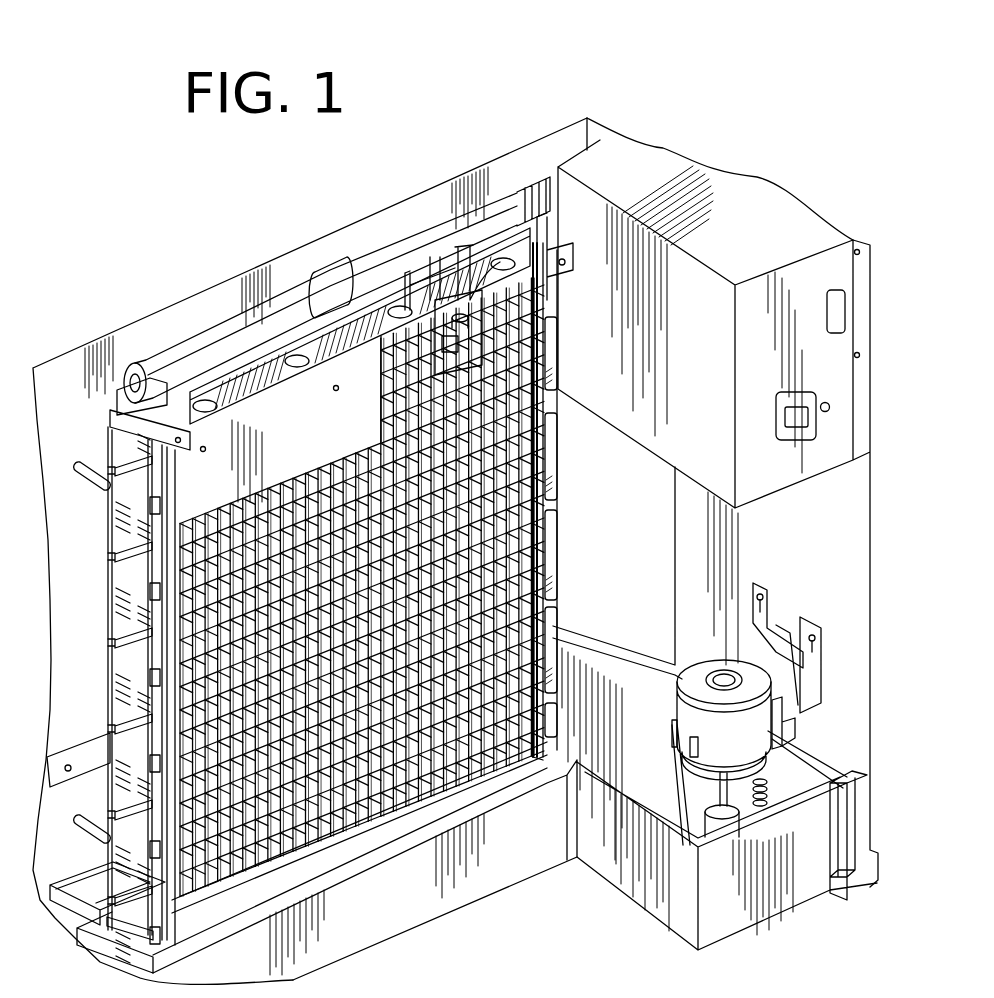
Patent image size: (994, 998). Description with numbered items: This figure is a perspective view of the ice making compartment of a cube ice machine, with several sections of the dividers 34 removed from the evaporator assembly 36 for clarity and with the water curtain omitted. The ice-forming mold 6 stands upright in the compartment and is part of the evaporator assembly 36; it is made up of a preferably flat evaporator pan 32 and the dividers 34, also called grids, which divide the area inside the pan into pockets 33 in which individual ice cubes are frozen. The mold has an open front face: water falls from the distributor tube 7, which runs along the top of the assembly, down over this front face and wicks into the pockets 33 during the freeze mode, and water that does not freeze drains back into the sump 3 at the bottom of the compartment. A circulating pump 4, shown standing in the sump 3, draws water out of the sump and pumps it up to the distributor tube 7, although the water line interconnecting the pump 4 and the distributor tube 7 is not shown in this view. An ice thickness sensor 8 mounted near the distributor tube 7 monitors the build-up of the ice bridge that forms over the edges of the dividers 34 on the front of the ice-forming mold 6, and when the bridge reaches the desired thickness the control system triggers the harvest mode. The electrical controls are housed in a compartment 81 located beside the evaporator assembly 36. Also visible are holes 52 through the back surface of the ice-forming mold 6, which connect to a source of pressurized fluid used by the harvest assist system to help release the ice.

The sump 3 is at (655, 798).
The circulating pump 4 is at (724, 826).
The ice-forming mold 6 is at (257, 834).
The distributor tube 7 is at (383, 268).
The ice thickness sensor 8 is at (448, 293).
The evaporator pan 32 is at (268, 424).
The pockets 33 is at (377, 812).
The dividers 34 is at (308, 830).
The evaporator assembly 36 is at (112, 617).
The hole 52 is at (205, 452).
The compartment 81 is at (727, 212).